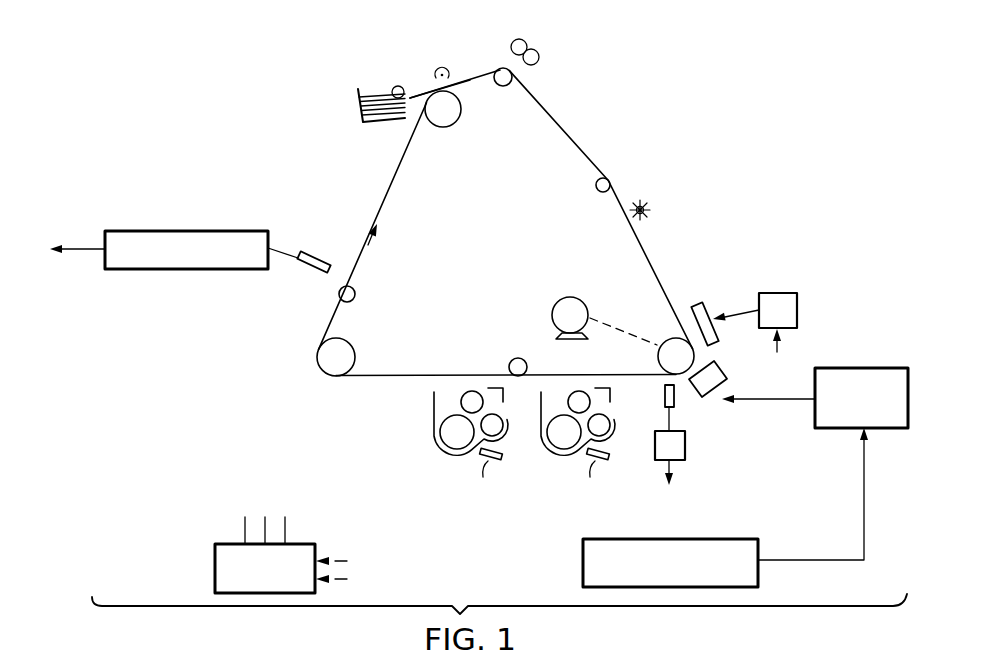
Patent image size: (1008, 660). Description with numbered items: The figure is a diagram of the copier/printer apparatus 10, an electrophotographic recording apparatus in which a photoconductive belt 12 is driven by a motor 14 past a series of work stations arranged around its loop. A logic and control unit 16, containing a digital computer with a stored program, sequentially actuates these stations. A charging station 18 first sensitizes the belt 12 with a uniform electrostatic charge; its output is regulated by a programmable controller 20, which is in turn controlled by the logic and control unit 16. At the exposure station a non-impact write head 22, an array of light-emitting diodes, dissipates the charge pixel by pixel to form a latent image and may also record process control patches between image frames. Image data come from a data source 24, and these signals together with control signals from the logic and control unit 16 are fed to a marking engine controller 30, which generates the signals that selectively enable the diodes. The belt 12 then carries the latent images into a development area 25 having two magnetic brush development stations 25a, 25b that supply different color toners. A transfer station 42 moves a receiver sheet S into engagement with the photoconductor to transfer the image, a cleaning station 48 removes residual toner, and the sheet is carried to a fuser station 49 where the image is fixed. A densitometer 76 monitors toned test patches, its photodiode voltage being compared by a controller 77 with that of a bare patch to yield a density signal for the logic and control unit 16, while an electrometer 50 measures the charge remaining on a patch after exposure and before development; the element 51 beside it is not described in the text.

The copier/printer apparatus 10 is at (632, 88).
The photoconductive belt 12 is at (387, 183).
The motor 14 is at (572, 300).
The logic and control unit (LCU) 16 is at (215, 553).
The charging station 18 is at (711, 307).
The programmable controller 20 is at (800, 308).
The non-impact write head 22 is at (728, 382).
The data source 24 is at (738, 539).
The development area 25 is at (446, 482).
The magnetic brush development station 25a is at (434, 436).
The magnetic brush development station 25b is at (541, 436).
The marking engine controller (MEC) 30 is at (867, 368).
The transfer station 42 is at (370, 71).
The cleaning station 48 is at (642, 198).
The fuser station 49 is at (542, 42).
The electrometer 50 is at (674, 400).
The amplifier 51 is at (685, 447).
The densitometer 76 is at (313, 255).
The controller 77 is at (240, 231).
The receiver sheet S is at (414, 94).